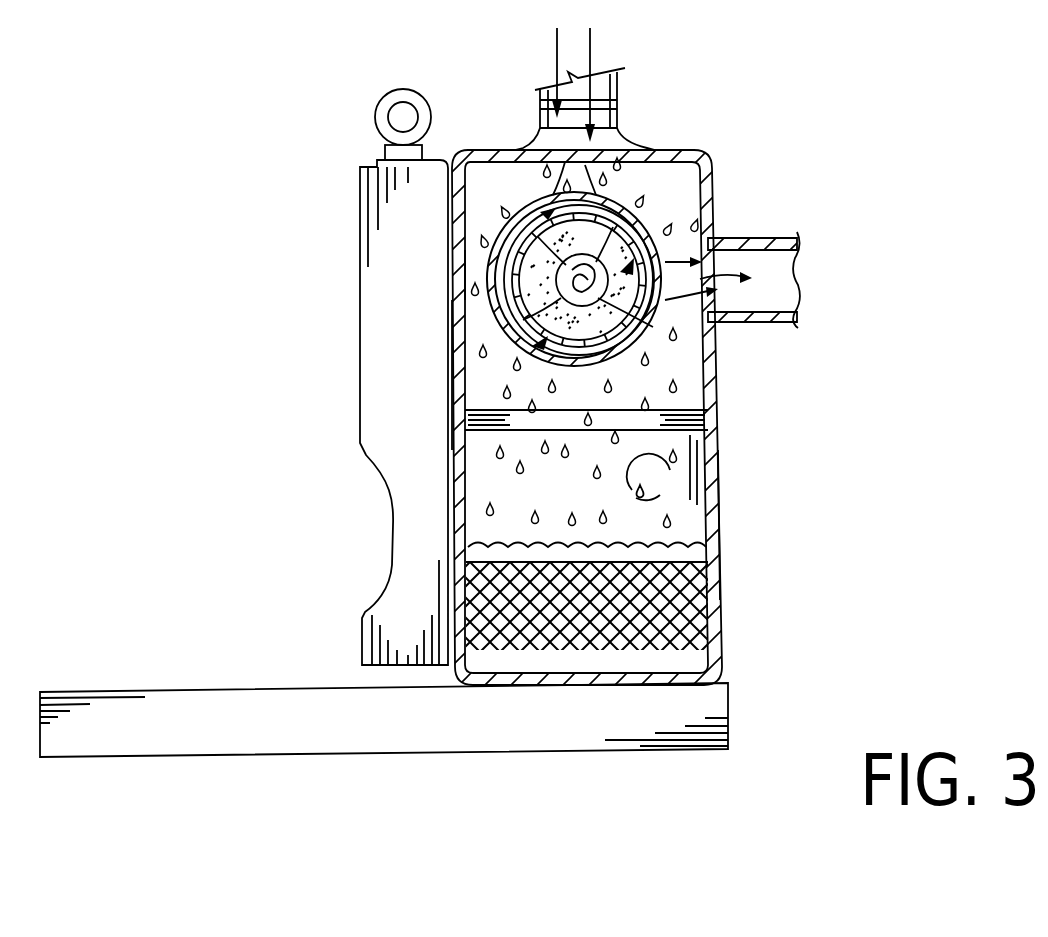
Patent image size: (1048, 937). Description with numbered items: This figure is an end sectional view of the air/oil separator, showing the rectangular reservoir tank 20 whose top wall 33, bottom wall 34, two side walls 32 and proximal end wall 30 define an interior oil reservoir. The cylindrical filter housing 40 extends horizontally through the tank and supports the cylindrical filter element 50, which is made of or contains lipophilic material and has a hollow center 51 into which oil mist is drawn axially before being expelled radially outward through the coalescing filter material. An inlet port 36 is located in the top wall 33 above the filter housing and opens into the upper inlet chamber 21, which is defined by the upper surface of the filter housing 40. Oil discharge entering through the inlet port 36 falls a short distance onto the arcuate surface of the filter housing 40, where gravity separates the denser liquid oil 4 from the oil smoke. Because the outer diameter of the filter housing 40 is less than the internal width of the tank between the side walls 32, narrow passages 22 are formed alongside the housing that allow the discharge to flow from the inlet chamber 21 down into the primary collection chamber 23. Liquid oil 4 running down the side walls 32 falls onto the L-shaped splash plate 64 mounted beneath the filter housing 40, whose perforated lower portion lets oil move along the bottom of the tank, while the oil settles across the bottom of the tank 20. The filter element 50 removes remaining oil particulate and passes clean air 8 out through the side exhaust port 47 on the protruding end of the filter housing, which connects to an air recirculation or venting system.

The liquid oil particles 4 is at (722, 600).
The clean air 8 is at (720, 273).
The reservoir tank 20 is at (710, 138).
The upper inlet chamber 21 is at (510, 206).
The passages 22 is at (475, 283).
The primary collection chamber 23 is at (576, 510).
The proximal end wall 30 is at (700, 388).
The side walls 32 is at (460, 420).
The top wall 33 is at (488, 162).
The bottom wall 34 is at (565, 680).
The inlet port 36 is at (613, 143).
The filter housing 40 is at (480, 328).
The side exhaust port 47 is at (770, 240).
The filter element 50 is at (624, 266).
The hollow center 51 is at (655, 328).
The splash plate 64 is at (480, 468).